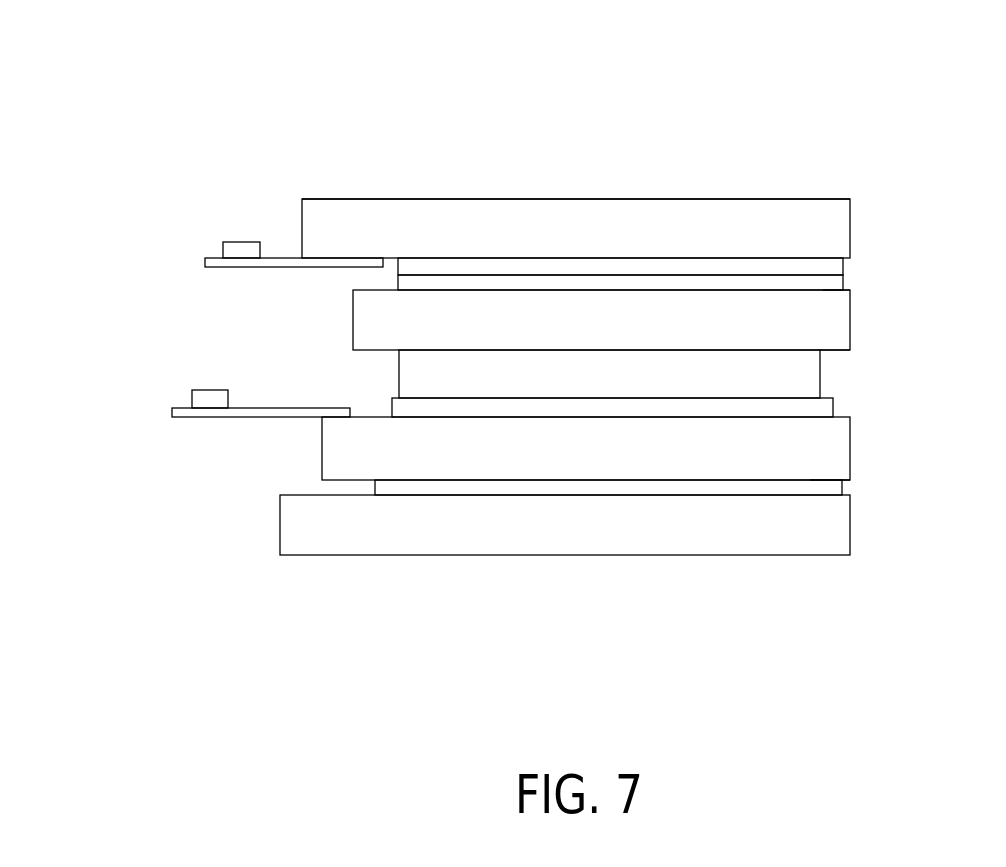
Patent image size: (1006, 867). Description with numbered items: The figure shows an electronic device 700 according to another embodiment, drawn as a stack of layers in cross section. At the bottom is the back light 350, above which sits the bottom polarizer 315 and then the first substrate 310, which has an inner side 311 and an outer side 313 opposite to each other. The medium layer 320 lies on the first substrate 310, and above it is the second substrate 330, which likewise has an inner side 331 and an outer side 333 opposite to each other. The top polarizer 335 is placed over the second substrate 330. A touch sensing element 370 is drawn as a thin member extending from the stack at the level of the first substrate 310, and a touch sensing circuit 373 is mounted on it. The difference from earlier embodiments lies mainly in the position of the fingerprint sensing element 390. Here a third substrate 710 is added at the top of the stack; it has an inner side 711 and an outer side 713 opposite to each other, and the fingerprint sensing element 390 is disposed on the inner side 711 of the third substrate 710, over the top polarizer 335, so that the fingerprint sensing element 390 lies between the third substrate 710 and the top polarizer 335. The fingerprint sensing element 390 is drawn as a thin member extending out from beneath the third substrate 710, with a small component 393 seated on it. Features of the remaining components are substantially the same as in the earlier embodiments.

The electronic device 700 is at (182, 78).
The third substrate 710 is at (627, 243).
The outer side of third substrate 713 is at (817, 199).
The inner side of third substrate 711 is at (845, 258).
The top polarizer 335 is at (830, 278).
The second substrate 330 is at (627, 337).
The outer side of second substrate 333 is at (823, 290).
The inner side of second substrate 331 is at (833, 350).
The medium layer 320 is at (627, 388).
The inner side of first substrate 311 is at (780, 417).
The first substrate 310 is at (627, 465).
The outer side of first substrate 313 is at (810, 480).
The bottom polarizer 315 is at (832, 487).
The back light 350 is at (627, 543).
The fingerprint sensing element 390 is at (398, 265).
The connector of flexible circuit board 393 is at (243, 241).
The touch sensing element 370 is at (825, 408).
The touch sensing circuit 373 is at (210, 390).